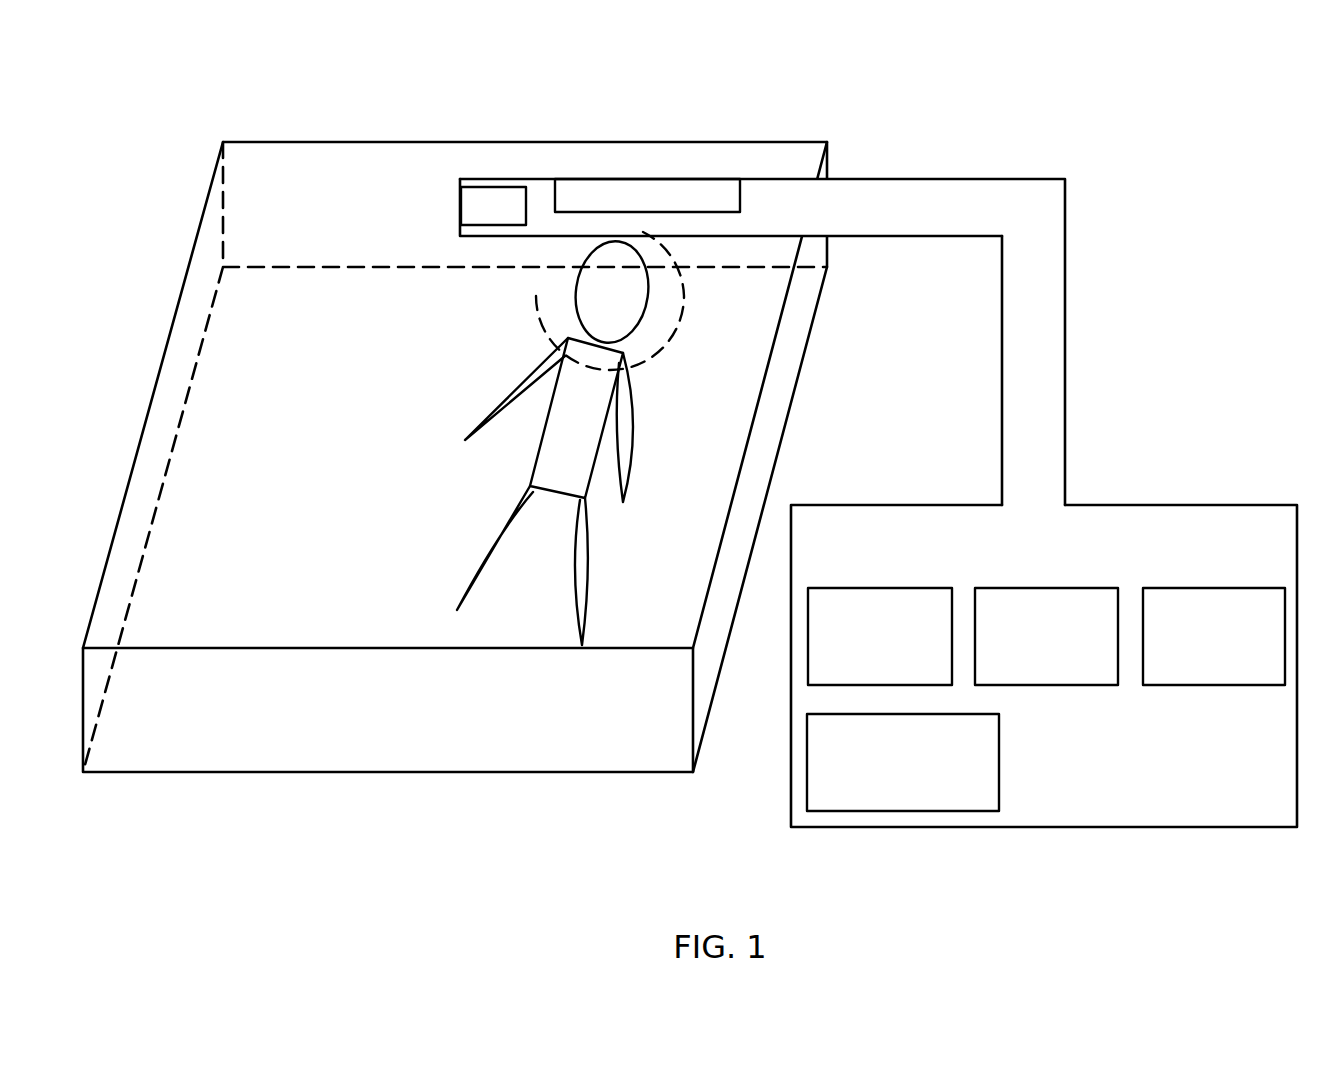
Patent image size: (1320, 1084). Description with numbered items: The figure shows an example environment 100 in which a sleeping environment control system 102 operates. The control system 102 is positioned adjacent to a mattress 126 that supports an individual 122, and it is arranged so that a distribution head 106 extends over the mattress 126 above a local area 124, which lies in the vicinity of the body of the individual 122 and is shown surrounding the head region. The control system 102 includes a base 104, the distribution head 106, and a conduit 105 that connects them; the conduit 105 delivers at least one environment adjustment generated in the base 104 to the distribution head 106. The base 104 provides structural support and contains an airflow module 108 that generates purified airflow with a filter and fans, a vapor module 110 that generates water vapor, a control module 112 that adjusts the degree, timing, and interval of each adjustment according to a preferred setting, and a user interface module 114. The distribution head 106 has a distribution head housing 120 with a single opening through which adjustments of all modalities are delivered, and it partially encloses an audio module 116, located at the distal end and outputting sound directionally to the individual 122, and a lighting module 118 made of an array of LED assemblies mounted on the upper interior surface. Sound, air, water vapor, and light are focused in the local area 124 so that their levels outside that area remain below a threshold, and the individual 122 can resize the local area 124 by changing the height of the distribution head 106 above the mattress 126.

The environment 100 is at (41, 81).
The sleeping environment control system 102 is at (1027, 100).
The base 104 is at (1024, 572).
The conduit 105 is at (1011, 352).
The distribution head 106 is at (903, 221).
The airflow module 108 is at (861, 677).
The vapor module 110 is at (1027, 677).
The control module 112 is at (1195, 677).
The user interface module 114 is at (884, 804).
The audio module 116 is at (475, 218).
The lighting module 118 is at (629, 206).
The distribution head housing 120 is at (915, 178).
The individual 122 is at (630, 468).
The local area 124 is at (676, 331).
The mattress 126 is at (412, 141).